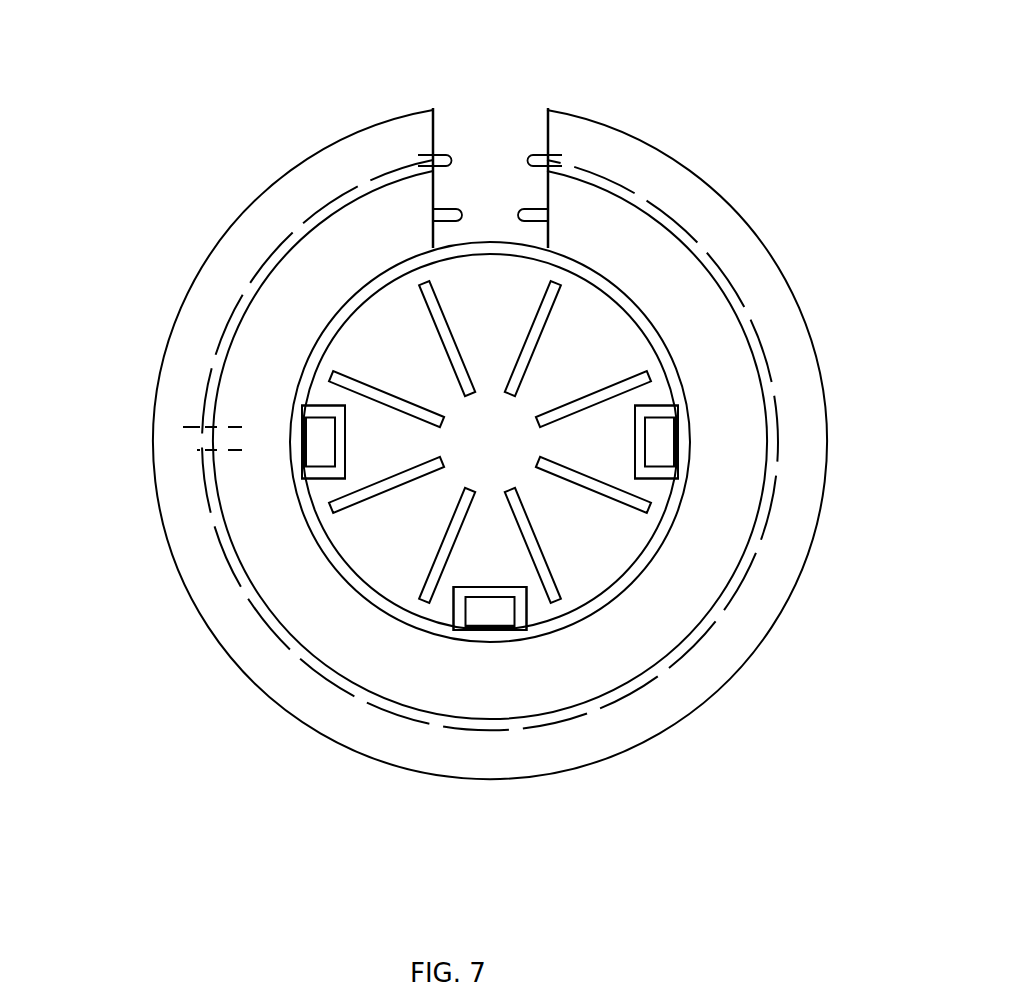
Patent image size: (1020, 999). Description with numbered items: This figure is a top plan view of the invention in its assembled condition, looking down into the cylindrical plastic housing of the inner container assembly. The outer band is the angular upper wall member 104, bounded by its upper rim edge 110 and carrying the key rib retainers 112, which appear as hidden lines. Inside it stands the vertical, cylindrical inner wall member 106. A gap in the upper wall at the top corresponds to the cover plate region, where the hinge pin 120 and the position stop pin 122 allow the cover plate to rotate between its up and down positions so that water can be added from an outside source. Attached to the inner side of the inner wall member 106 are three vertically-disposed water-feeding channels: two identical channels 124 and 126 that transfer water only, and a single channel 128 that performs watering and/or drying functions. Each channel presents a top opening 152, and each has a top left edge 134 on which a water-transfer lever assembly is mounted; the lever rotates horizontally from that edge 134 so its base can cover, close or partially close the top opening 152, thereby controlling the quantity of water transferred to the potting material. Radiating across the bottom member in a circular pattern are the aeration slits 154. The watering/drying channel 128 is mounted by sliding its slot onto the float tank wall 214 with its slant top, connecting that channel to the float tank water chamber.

The angular upper wall member 104 is at (705, 337).
The inner wall member 106 is at (632, 303).
The upper rim edge 110 is at (700, 222).
The key rib retainers 112 is at (197, 450).
The hinge pin 120 is at (517, 207).
The position stop pin 122 is at (452, 158).
The water-feeding channel 124 is at (663, 407).
The water-feeding channel 126 is at (322, 472).
The water-feeding channel 128 is at (525, 628).
The top left edge 134 is at (307, 408).
The top openings 152 is at (307, 447).
The aeration slits 154 is at (449, 368).
The float tank wall 214 is at (478, 612).